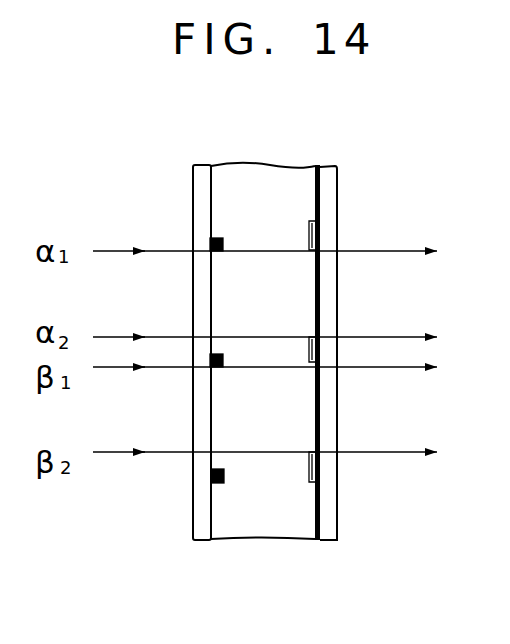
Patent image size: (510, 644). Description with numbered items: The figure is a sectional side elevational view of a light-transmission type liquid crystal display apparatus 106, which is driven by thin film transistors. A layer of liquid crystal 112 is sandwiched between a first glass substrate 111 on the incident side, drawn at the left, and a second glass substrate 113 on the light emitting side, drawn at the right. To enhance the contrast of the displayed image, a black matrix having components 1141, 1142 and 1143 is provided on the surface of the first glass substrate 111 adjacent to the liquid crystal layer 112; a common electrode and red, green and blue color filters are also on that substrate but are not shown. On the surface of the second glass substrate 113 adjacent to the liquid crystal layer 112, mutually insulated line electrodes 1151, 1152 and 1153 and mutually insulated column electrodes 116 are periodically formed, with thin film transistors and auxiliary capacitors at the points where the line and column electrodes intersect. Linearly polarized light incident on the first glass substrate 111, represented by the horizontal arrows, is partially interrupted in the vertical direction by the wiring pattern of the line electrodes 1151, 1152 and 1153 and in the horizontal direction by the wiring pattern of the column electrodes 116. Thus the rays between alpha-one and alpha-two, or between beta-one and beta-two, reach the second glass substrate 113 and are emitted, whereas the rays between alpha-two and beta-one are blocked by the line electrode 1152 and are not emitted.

The transmission type liquid crystal display apparatus 106 is at (235, 164).
The first glass substrate 111 is at (203, 517).
The liquid crystal layer 112 is at (247, 530).
The second glass substrate 113 is at (332, 530).
The column electrodes 116 is at (322, 187).
The black matrix component 1141 is at (210, 245).
The black matrix component 1142 is at (212, 370).
The black matrix component 1143 is at (213, 478).
The line electrode 1151 is at (322, 235).
The line electrode 1152 is at (320, 350).
The line electrode 1153 is at (323, 470).